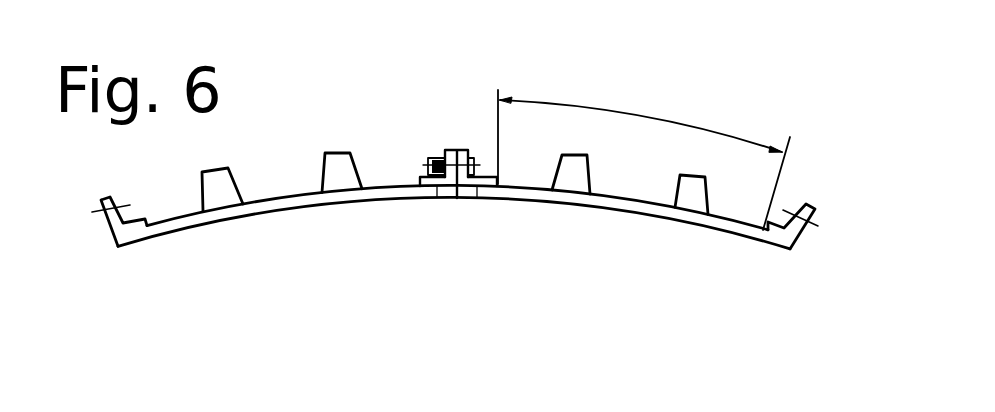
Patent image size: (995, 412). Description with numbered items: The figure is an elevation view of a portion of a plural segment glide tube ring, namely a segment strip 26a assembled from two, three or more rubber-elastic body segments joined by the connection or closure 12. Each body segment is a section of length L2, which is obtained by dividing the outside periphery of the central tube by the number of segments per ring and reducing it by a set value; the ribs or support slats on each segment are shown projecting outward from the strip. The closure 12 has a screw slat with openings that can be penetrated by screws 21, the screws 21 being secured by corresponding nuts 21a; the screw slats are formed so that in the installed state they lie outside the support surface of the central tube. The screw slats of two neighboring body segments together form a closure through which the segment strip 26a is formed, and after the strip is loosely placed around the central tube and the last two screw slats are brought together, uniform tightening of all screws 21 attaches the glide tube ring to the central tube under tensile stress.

The connection or closure 12 is at (790, 252).
The screw 21 is at (471, 157).
The nut 21a is at (440, 154).
The segment strip 26a is at (477, 197).
The length L2 is at (600, 108).